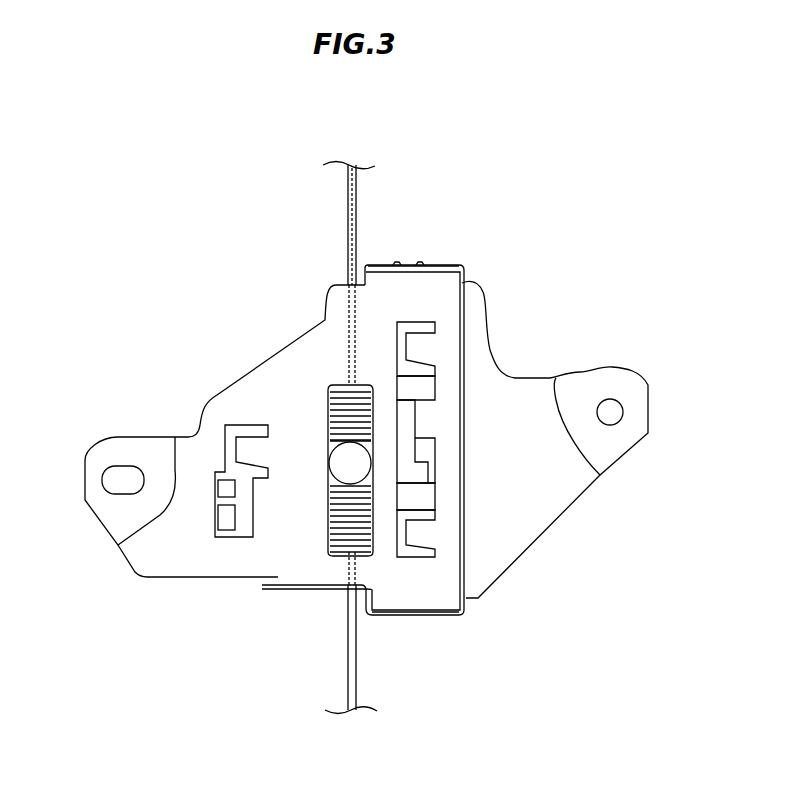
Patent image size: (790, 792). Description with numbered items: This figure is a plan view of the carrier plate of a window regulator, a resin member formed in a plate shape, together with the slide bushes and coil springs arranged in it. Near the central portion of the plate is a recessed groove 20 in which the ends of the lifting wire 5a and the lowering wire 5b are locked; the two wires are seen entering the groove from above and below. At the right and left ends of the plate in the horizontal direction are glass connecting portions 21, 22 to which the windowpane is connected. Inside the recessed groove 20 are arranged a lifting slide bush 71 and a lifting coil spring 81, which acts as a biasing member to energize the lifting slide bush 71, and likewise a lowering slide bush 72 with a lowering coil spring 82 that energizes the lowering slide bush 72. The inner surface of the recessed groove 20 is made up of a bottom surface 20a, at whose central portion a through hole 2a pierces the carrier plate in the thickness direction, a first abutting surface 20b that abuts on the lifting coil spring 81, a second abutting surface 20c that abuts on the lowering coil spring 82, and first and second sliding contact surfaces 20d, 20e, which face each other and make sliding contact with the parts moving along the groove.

The through hole 2a is at (336, 487).
The lifting wire 5a is at (356, 230).
The lowering wire 5b is at (357, 680).
The recessed groove 20 is at (382, 383).
The bottom surface 20a is at (436, 536).
The first abutting surface 20b is at (372, 382).
The second abutting surface 20c is at (363, 553).
The first sliding contact surface 20d is at (373, 460).
The second sliding contact surface 20e is at (329, 450).
The glass connecting portion 21 is at (625, 380).
The glass connecting portion 22 is at (97, 458).
The lifting slide bush 71 is at (373, 427).
The lowering slide bush 72 is at (374, 520).
The lifting coil spring 81 is at (331, 386).
The lowering coil spring 82 is at (332, 553).